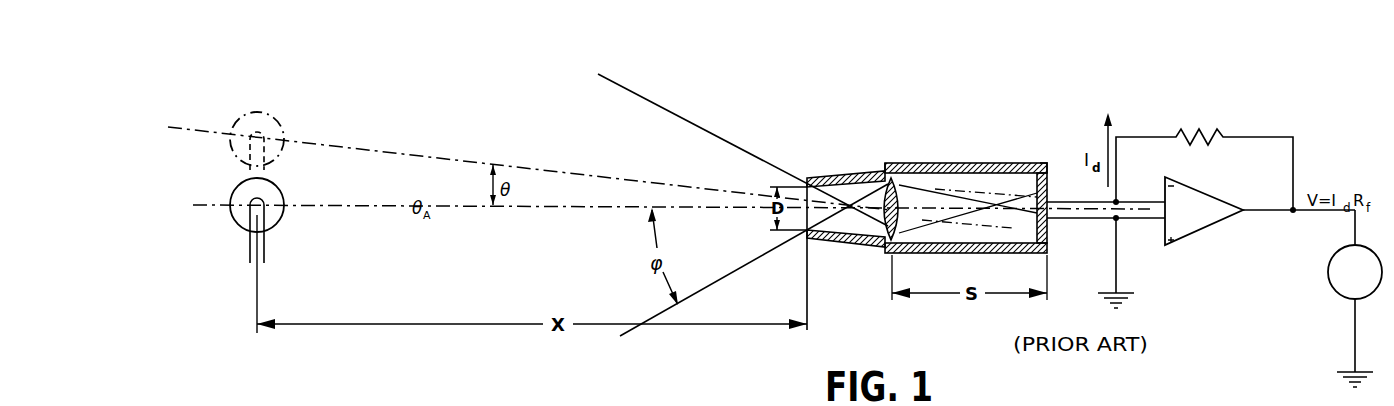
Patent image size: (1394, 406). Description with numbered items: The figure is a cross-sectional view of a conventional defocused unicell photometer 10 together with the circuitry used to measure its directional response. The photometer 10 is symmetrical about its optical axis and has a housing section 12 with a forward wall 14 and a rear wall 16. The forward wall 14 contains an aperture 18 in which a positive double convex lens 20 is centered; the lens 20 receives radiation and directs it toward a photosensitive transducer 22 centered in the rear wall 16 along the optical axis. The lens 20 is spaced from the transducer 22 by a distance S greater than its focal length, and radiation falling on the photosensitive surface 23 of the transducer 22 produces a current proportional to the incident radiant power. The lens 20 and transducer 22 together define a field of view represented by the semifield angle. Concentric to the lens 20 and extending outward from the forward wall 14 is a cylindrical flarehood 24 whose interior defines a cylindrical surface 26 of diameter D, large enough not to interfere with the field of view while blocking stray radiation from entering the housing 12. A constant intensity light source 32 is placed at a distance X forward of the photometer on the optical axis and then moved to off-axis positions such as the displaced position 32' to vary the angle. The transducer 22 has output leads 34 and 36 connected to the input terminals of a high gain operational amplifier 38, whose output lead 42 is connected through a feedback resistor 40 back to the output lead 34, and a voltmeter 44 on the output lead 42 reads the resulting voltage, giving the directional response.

The unicell photometer 10 is at (941, 193).
The housing section 12 is at (1004, 164).
The forward wall 14 is at (883, 169).
The rear wall 16 is at (1048, 178).
The aperture 18 is at (897, 241).
The positive double convex lens 20 is at (900, 197).
The photosensitive transducer 22 is at (1044, 227).
The photosensitive surface 23 is at (1030, 215).
The cylindrical flarehood 24 is at (848, 172).
The cylindrical surface 26 is at (834, 187).
The constant intensity light source 32 is at (270, 219).
The constant intensity light source 32' is at (271, 135).
The output lead 34 is at (1064, 196).
The output lead 36 is at (1098, 220).
The operational amplifier 38 is at (1216, 189).
The feedback resistor 40 is at (1214, 137).
The output lead 42 is at (1299, 223).
The voltmeter 44 is at (1331, 285).